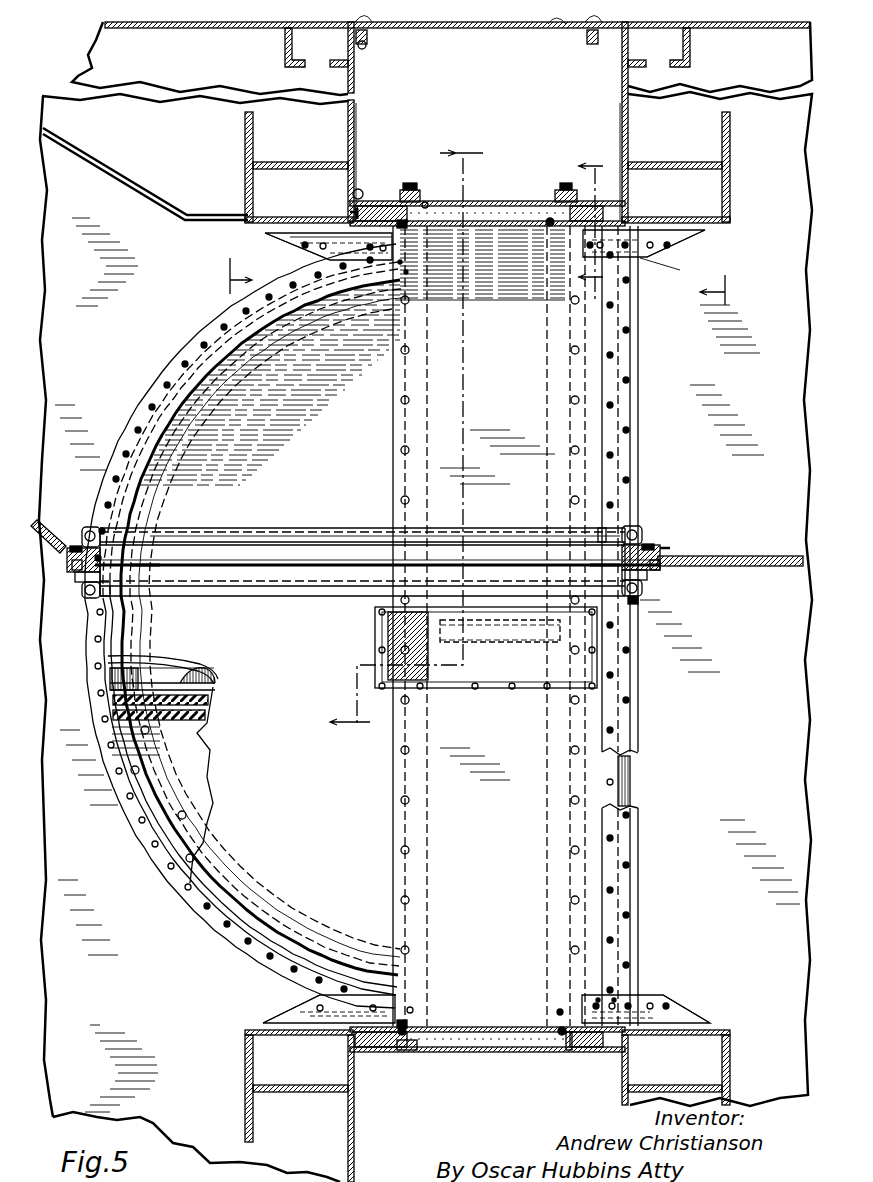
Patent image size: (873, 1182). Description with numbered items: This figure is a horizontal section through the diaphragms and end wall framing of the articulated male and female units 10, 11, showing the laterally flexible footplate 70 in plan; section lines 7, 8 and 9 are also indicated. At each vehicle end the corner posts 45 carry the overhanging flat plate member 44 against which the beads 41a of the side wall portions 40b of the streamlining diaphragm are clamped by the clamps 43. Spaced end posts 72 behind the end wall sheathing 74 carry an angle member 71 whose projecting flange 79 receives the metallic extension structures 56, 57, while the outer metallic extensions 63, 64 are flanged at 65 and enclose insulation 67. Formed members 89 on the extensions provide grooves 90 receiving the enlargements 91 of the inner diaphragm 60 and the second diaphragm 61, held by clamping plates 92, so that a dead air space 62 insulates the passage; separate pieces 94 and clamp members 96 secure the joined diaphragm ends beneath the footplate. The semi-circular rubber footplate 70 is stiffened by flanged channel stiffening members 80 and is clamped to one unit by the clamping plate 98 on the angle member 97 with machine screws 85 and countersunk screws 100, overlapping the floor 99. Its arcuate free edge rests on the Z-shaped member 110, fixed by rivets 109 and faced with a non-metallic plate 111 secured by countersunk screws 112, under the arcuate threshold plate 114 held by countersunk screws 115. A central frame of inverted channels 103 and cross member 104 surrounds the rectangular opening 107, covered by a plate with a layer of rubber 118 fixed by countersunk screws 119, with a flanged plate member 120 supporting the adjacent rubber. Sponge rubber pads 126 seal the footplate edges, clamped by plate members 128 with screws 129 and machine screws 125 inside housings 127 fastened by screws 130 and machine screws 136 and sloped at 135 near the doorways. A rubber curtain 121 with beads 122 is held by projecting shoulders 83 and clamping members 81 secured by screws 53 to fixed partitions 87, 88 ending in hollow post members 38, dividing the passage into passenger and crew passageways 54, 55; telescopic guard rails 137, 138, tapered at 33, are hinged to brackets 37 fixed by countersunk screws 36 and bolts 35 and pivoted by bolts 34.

The section line 7- 7 is at (481, 281).
The section line 8- 8 is at (590, 224).
The section line 9- 9 is at (406, 436).
The male unit 10 is at (620, 97).
The female unit 11 is at (356, 103).
The taper 33 is at (160, 545).
The bolts 34 is at (90, 528).
The bolts 35 is at (598, 538).
The countersunk screws 36 is at (664, 548).
The brackets 37 is at (644, 545).
The hollow post members 38 is at (80, 548).
The side wall portions of the diaphragm 40b is at (490, 29).
The beads or enlargements 41a is at (368, 27).
The clamps 43 is at (366, 48).
The overhanging flat plate member 44 is at (560, 27).
The corner posts 45 is at (284, 52).
The screws 53 is at (82, 584).
The passengers' passageway 54 is at (345, 435).
The dining car crew's passageway 55 is at (340, 782).
The metallic extension structure 56 is at (560, 1010).
The metallic extension structure 57 is at (414, 1008).
The diaphragm 60 is at (490, 218).
The second diaphragm 61 is at (468, 220).
The dead air space 62 is at (492, 200).
The metallic extension 63 is at (582, 1052).
The metallic extension 64 is at (390, 1052).
The flange 65 is at (360, 192).
The insulation 67 is at (382, 205).
The footplate 70 is at (260, 627).
The angle member 71 is at (348, 210).
The end posts 72 is at (285, 162).
The end wall sheathing 74 is at (354, 113).
The projecting flange 79 is at (366, 206).
The flanged channel stiffening members 80 is at (206, 716).
The clamping members 81 is at (640, 596).
The projecting shoulders 83 is at (142, 560).
The machine screws 85 is at (611, 890).
The fixed partition 87 is at (722, 567).
The fixed partition 88 is at (42, 527).
The formed member 89 is at (406, 190).
The grooves 90 is at (565, 192).
The enlargements 91 is at (424, 202).
The clamping plates 92 is at (548, 218).
The separate clamping pieces 94 is at (395, 620).
The clamp members 96 is at (466, 620).
The angle member 97 is at (632, 782).
The clamping plate 98 is at (638, 744).
The floor 99 is at (432, 863).
The countersunk screws 100 is at (627, 722).
The inverted channels 103 is at (210, 674).
The cross member 104 is at (152, 662).
The rectangular opening 107 is at (458, 690).
The rivets 109 is at (152, 728).
The Z-shaped member 110 is at (194, 830).
The non-metallic plate 111 is at (142, 788).
The countersunk screws 112 is at (132, 769).
The arcuate threshold plate 114 is at (178, 378).
The countersunk screws 115 is at (165, 440).
The layer of rubber 118 is at (502, 690).
The countersunk screws 119 is at (452, 560).
The flanged plate member 120 is at (190, 658).
The curtain 121 is at (332, 560).
The beads 122 is at (652, 547).
The machine screws 125 is at (408, 273).
The sponge rubber pad 126 is at (514, 296).
The housings 127 is at (278, 238).
The plate members 128 is at (642, 258).
The screws 129 is at (330, 250).
The screws 130 is at (330, 250).
The sloped ends 135 is at (702, 240).
The machine screws 136 is at (402, 263).
The telescopic guard rail 137 is at (338, 598).
The telescopic guard rail 138 is at (324, 530).